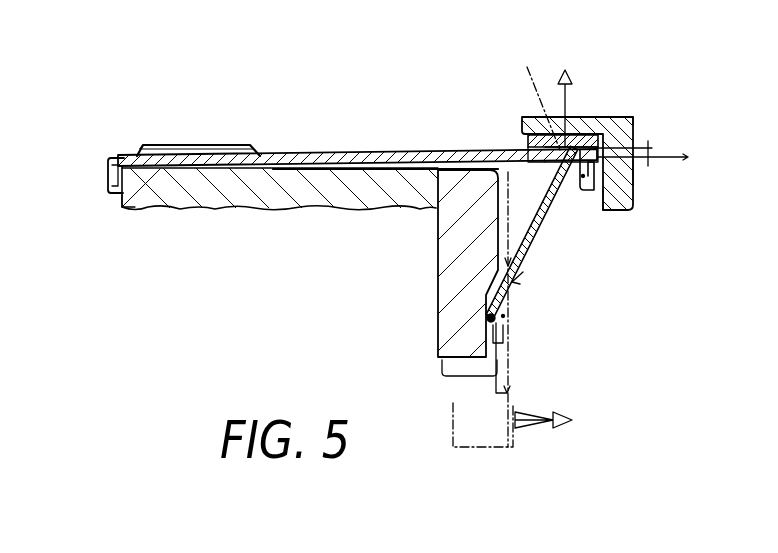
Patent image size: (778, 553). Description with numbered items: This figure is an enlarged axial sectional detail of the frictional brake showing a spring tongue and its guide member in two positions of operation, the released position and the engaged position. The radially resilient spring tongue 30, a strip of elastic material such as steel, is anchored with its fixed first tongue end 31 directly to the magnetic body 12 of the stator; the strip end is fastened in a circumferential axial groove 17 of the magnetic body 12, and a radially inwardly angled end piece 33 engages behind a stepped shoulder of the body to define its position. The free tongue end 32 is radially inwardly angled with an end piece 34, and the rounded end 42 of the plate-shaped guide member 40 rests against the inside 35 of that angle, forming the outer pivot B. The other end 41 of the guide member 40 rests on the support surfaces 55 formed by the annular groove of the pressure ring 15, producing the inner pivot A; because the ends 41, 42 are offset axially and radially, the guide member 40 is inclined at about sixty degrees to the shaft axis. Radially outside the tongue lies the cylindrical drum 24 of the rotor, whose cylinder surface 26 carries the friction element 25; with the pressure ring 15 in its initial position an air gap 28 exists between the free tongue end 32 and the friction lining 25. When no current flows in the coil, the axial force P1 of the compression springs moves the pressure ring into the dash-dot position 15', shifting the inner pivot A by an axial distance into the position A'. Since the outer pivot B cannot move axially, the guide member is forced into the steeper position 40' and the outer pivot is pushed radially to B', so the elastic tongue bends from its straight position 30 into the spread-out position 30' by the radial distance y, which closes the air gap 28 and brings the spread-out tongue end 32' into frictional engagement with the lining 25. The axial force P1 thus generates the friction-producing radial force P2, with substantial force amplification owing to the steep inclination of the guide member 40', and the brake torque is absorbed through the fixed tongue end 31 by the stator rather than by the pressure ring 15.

The magnetic body 12 is at (125, 216).
The pressure ring 15 is at (449, 390).
The pressure ring position 15' is at (483, 458).
The circumferential axial grooves 17 is at (125, 206).
The cylindrical drum 24 is at (535, 137).
The friction element 25 is at (530, 150).
The cylinder surface 26 is at (545, 142).
The air gap 28 is at (640, 150).
The spring tongues 30 is at (357, 129).
The spring tongue position 30' is at (409, 129).
The fixed first tongue end 31 is at (105, 142).
The free tongue end 32 is at (535, 235).
The spread-out tongue end position 32' is at (537, 94).
The end piece 33 is at (108, 181).
The end piece 34 is at (633, 198).
The inside of the angle 35 is at (633, 172).
The guide member 40 is at (451, 309).
The guide member position 40' is at (556, 289).
The guide member end 41 is at (489, 297).
The guide member end 42 is at (568, 162).
The support surfaces 55 is at (492, 323).
The inner pivot A is at (443, 313).
The displaced inner pivot A' is at (536, 332).
The outer pivot B is at (618, 212).
The displaced outer pivot B' is at (661, 90).
The axial force P1 is at (532, 422).
The radial force P2 is at (566, 110).
The radial distance y is at (650, 154).